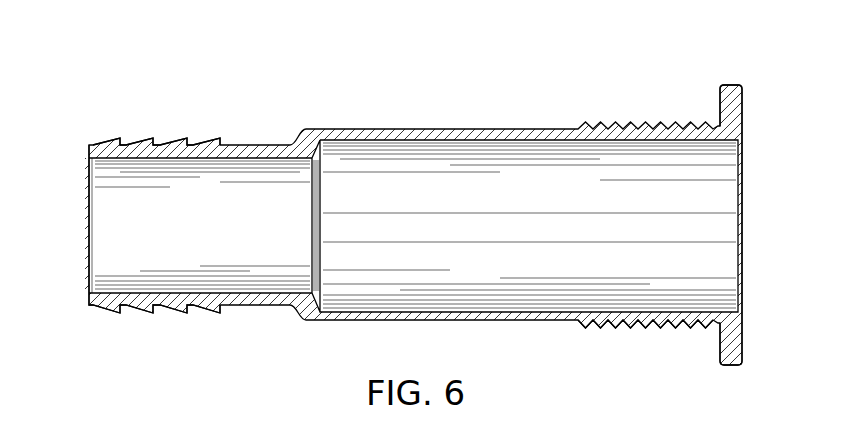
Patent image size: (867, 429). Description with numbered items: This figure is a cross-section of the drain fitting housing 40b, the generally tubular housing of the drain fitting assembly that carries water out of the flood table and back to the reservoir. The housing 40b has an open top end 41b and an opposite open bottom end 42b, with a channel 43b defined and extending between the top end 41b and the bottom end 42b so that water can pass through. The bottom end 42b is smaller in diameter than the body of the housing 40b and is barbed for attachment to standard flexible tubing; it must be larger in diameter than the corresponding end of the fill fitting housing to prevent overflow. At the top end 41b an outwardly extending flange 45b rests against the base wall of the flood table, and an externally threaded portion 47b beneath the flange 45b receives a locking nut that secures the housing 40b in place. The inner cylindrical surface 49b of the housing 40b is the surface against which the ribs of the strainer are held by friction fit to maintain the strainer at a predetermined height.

The drain fitting housing 40b is at (369, 96).
The top end 41b is at (743, 343).
The bottom end 42b is at (88, 300).
The channel 43b is at (107, 162).
The flange 45b is at (730, 96).
The externally threaded portion 47b is at (630, 329).
The inner cylindrical surface 49b is at (489, 145).